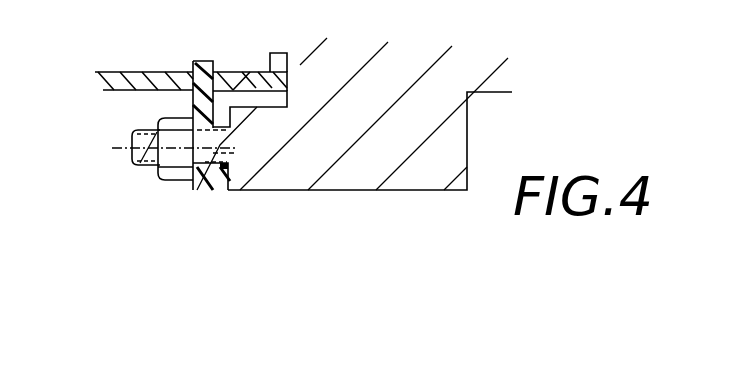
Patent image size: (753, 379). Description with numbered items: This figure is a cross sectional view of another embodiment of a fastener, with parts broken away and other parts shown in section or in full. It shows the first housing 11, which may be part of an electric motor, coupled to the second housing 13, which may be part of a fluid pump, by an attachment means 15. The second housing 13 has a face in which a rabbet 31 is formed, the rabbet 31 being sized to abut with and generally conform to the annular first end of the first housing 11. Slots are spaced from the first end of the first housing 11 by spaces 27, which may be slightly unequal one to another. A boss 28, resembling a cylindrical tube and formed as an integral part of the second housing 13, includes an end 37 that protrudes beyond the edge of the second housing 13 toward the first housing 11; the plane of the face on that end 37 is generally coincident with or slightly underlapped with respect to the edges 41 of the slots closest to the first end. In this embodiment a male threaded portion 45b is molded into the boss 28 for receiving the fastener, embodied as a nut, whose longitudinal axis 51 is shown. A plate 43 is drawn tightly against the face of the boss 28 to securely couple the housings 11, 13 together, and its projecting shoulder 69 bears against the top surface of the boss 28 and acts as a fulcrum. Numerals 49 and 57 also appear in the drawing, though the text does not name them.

The first housing 11 is at (117, 71).
The second housing 13 is at (468, 157).
The attachment means 15 is at (150, 110).
The spaces 27 is at (260, 72).
The boss 28 is at (268, 193).
The rabbet 31 is at (273, 62).
The end 37 is at (229, 168).
The edges 41 is at (231, 72).
The plate 43 is at (194, 191).
The male threaded portion 45b is at (235, 153).
The nut 49 is at (158, 178).
The longitudinal axis 51 is at (122, 147).
The post 57 is at (173, 80).
The projecting shoulder 69 is at (221, 192).